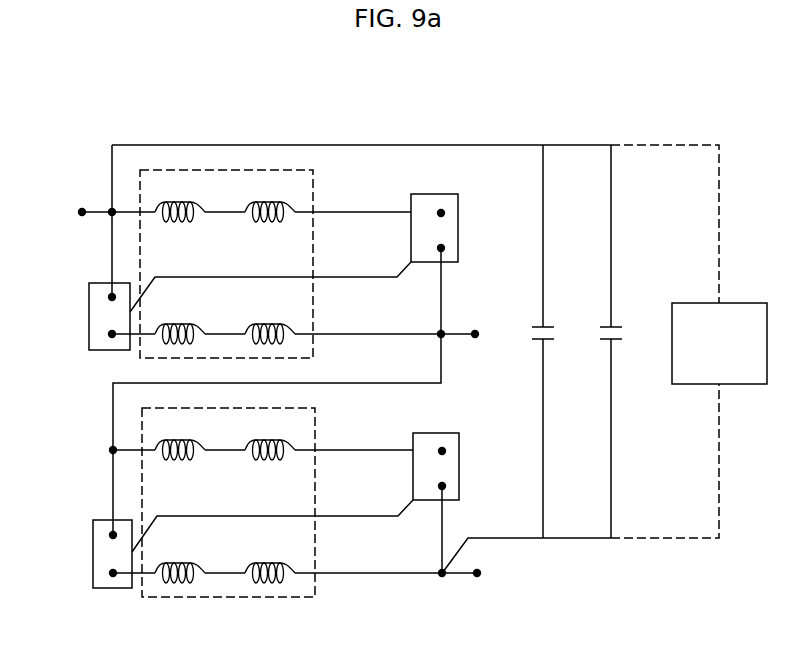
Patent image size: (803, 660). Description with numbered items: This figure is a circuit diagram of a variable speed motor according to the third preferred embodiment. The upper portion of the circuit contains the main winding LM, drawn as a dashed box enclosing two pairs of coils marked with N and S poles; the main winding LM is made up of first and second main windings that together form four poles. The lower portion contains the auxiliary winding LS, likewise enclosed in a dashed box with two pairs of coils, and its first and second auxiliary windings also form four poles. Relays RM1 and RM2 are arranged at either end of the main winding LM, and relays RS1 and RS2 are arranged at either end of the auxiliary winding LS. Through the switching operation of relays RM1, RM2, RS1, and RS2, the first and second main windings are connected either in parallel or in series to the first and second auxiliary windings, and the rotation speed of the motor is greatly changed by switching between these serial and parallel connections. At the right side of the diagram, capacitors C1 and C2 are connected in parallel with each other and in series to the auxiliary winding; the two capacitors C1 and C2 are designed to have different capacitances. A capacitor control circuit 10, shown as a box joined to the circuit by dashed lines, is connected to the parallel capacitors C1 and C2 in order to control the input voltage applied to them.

The capacitor control circuit 10 is at (719, 343).
The capacitor C1 is at (551, 341).
The capacitor C2 is at (619, 341).
The main winding LM is at (313, 190).
The auxiliary winding LS is at (315, 428).
The relay RM1 is at (458, 213).
The relay RM2 is at (89, 299).
The relay RS1 is at (459, 451).
The relay RS2 is at (93, 538).